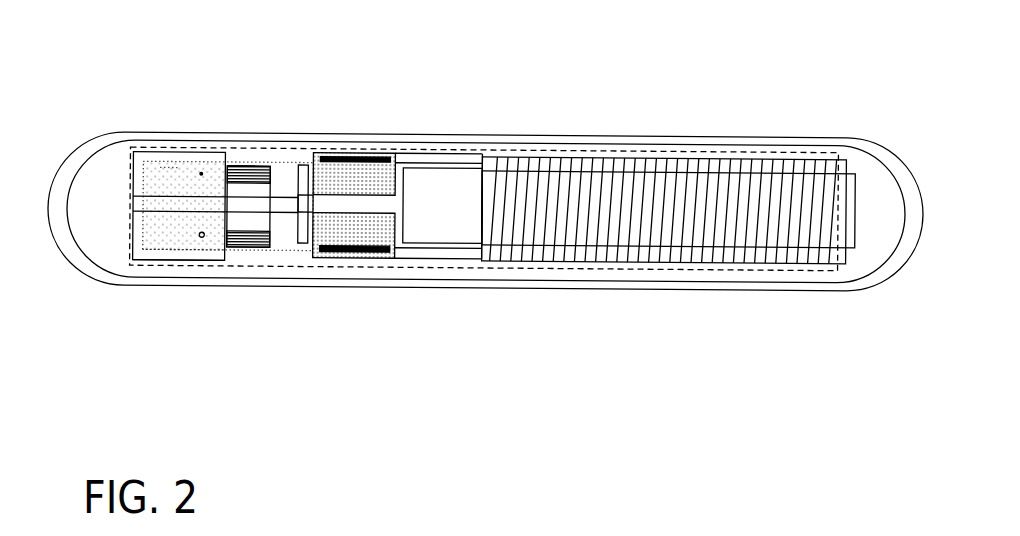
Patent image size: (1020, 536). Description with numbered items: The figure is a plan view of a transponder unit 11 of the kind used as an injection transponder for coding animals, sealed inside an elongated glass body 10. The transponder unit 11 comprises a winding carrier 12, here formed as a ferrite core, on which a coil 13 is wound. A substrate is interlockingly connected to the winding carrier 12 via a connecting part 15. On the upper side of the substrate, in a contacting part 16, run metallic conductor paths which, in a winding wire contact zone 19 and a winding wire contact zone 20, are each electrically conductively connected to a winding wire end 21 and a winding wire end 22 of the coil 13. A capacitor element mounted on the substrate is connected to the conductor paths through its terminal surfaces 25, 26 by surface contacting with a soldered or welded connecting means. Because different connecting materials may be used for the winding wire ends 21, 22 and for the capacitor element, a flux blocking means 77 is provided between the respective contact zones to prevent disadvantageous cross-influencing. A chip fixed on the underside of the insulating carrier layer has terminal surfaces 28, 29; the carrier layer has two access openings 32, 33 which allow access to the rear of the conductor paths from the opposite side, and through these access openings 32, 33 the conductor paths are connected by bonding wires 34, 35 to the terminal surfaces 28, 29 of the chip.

The glass body 10 is at (790, 137).
The transponder unit 11 is at (553, 112).
The winding carrier 12 is at (455, 213).
The coil 13 is at (691, 130).
The connecting part 15 is at (423, 148).
The contacting part 16 is at (275, 112).
The winding wire contact zone 19 is at (362, 183).
The winding wire contact zone 20 is at (338, 238).
The winding wire end 21 is at (333, 160).
The winding wire end 22 is at (373, 253).
The terminal surface 25 is at (252, 175).
The terminal surface 26 is at (252, 243).
The terminal surface 28 is at (201, 176).
The terminal surface 29 is at (205, 240).
The access opening 32 is at (123, 128).
The access opening 33 is at (160, 285).
The bonding wire 34 is at (173, 175).
The bonding wire 35 is at (182, 237).
The flux blocking means 77 is at (302, 233).